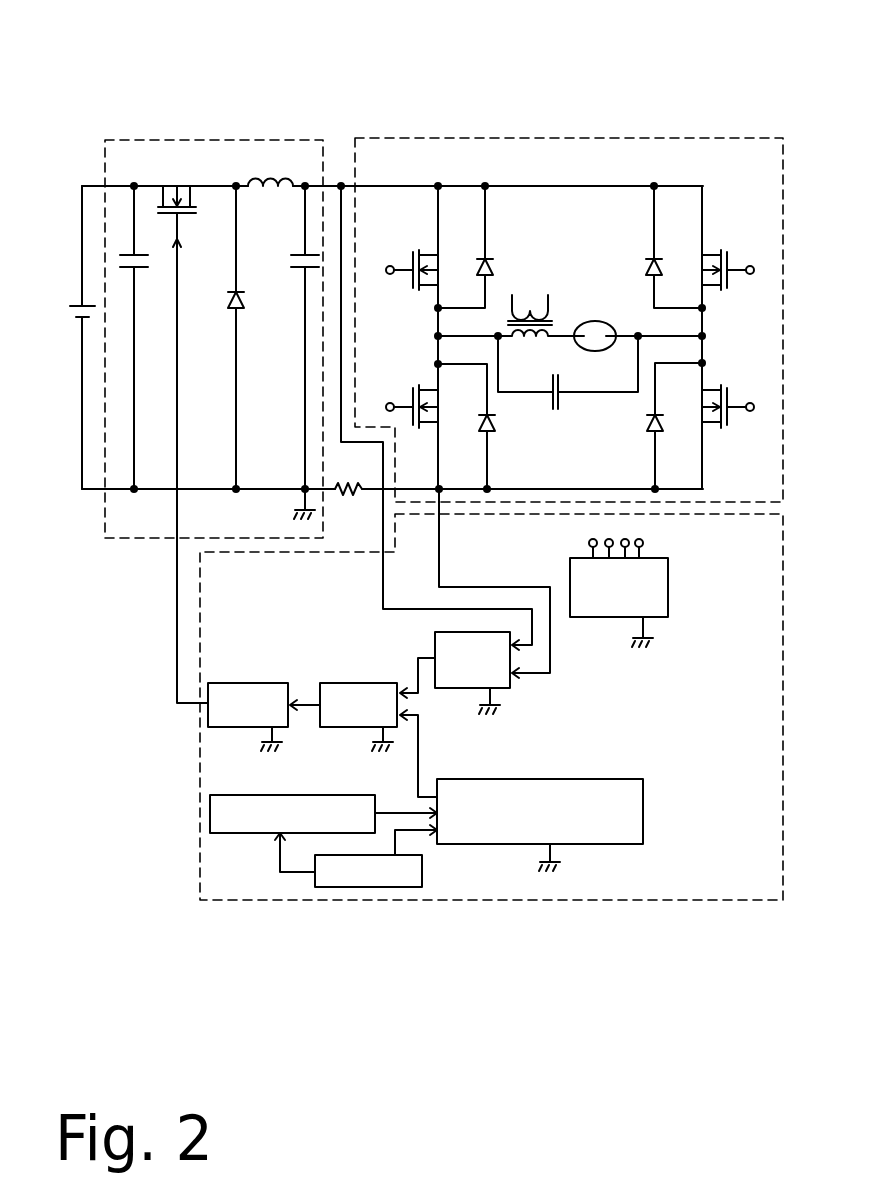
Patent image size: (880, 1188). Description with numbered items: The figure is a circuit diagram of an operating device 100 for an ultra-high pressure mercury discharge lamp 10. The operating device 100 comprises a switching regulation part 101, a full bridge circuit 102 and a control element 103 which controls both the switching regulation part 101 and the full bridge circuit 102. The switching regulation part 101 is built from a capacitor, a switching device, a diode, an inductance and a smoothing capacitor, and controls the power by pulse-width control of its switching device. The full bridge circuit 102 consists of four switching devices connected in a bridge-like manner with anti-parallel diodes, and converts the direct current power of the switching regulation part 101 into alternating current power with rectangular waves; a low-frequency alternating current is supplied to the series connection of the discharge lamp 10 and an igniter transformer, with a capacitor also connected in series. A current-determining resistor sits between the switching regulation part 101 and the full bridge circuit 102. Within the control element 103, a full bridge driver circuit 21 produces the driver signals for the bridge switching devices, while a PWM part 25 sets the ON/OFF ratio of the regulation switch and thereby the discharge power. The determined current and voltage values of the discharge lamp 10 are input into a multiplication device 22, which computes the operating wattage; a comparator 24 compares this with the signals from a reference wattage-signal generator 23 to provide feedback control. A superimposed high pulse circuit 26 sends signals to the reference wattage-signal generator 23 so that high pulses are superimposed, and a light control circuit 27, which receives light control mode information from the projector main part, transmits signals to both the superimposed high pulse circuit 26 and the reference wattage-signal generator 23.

The operating device 100 is at (477, 35).
The switching regulation part 101 is at (164, 140).
The full bridge circuit 102 is at (611, 140).
The control element 103 is at (200, 743).
The discharge lamp 10 is at (606, 323).
The full bridge driver circuit 21 is at (668, 598).
The multiplication device 22 is at (435, 636).
The reference wattage-signal generator 23 is at (564, 779).
The comparator 24 is at (338, 683).
The PWM part 25 is at (236, 683).
The superimposed high pulse circuit 26 is at (325, 795).
The light control circuit 27 is at (400, 887).